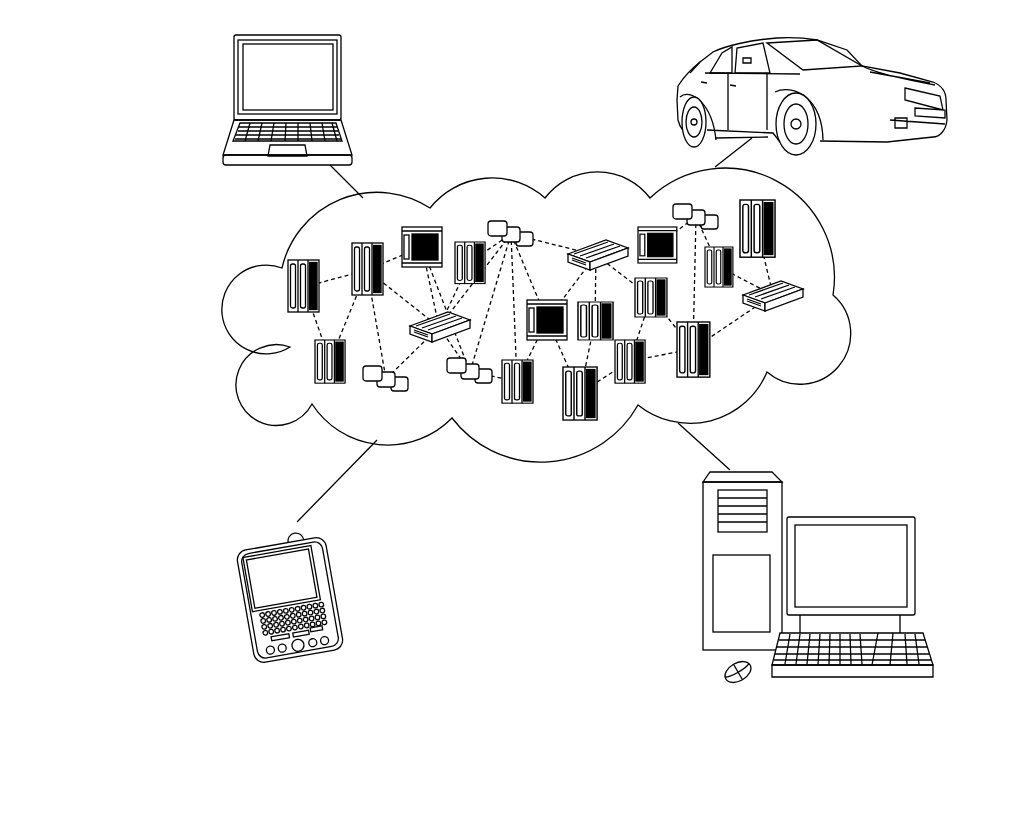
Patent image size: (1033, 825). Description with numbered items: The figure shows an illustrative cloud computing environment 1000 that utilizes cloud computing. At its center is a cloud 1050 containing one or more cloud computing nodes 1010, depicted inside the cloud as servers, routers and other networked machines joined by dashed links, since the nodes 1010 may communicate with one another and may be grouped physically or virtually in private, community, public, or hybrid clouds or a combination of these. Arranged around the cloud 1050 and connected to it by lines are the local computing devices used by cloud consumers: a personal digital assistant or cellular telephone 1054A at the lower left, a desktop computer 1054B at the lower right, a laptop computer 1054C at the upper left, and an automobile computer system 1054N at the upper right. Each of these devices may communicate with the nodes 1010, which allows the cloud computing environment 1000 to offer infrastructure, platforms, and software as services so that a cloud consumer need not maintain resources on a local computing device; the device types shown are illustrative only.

The cloud computing environment 1000 is at (108, 58).
The cloud 1050 is at (851, 293).
The cloud computing nodes 1010 is at (810, 318).
The personal digital assistant (PDA) or cellular telephone 1054A is at (333, 592).
The desktop computer 1054B is at (847, 515).
The laptop computer 1054C is at (342, 87).
The automobile computer system 1054N is at (678, 98).